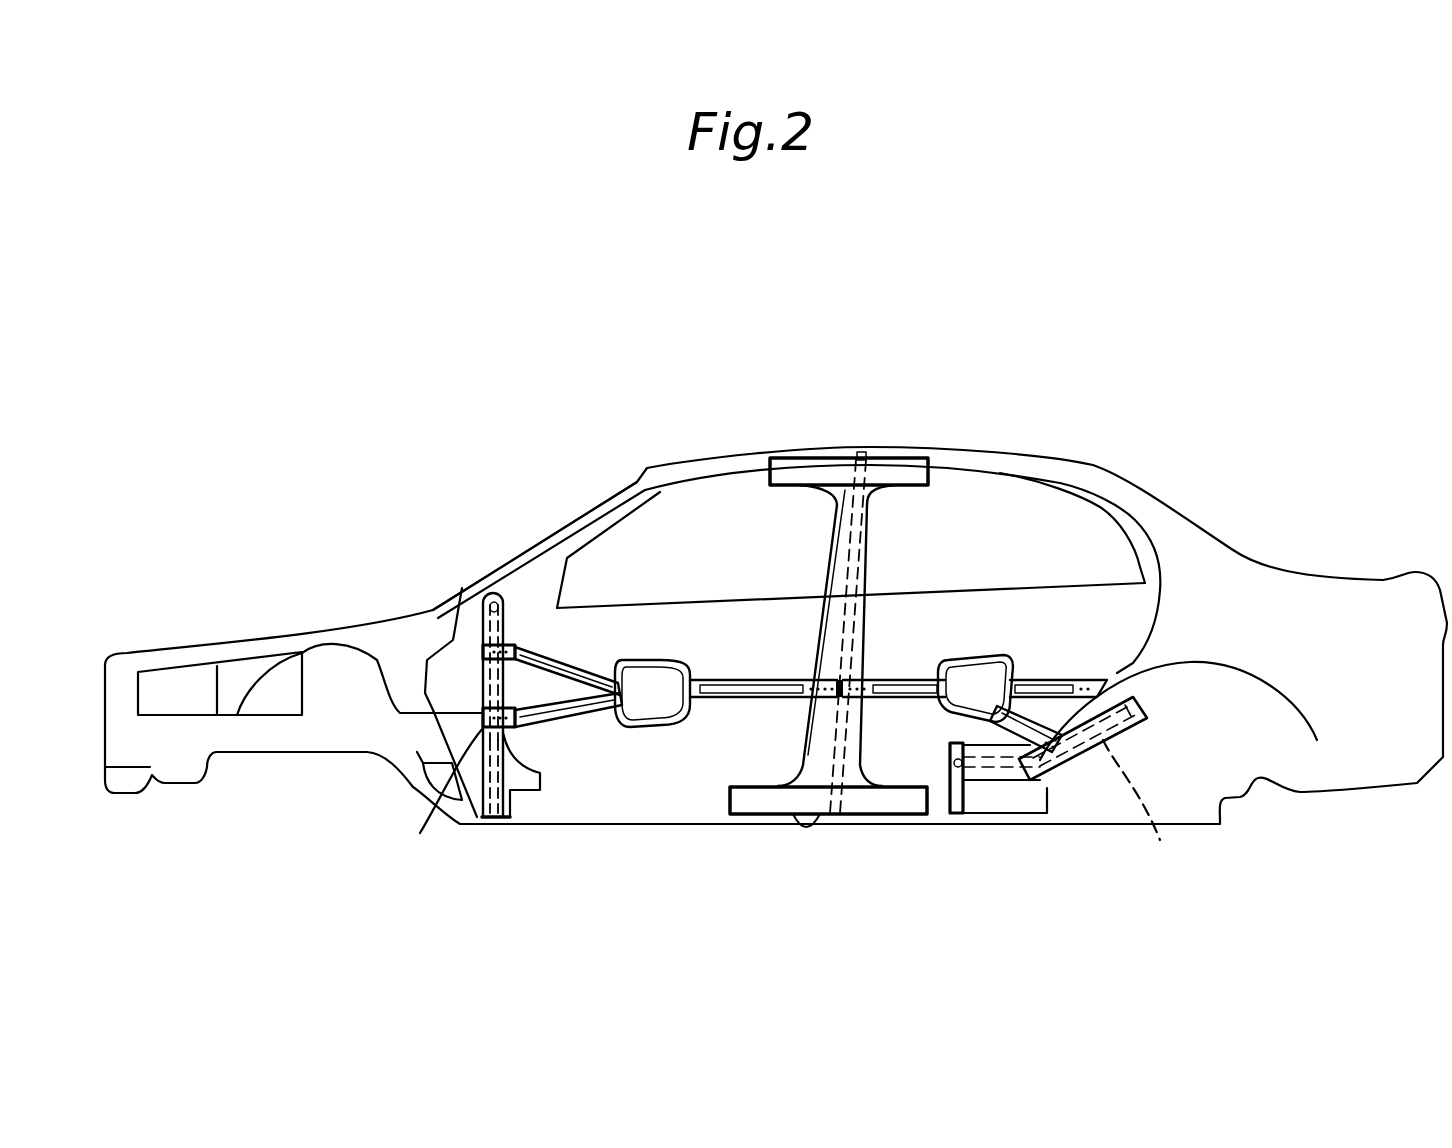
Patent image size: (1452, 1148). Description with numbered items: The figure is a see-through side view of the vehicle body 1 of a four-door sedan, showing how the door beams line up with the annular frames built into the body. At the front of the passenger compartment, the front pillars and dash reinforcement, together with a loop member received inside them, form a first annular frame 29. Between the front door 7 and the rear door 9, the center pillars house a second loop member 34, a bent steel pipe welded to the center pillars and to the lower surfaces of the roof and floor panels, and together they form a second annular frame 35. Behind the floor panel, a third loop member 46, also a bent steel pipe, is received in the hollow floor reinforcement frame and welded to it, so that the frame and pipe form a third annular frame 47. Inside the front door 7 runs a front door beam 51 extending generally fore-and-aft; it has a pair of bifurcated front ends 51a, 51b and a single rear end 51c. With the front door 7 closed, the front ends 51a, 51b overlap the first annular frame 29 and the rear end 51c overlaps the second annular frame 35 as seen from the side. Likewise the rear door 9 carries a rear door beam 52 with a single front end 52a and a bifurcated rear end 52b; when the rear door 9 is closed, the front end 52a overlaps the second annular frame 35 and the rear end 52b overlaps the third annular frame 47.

The vehicle body 1 is at (300, 398).
The first annular frame 29 is at (453, 596).
The front door 7 is at (650, 622).
The rear door 9 is at (1023, 593).
The second annular frame 35 is at (793, 442).
The second loop member 34 is at (861, 453).
The front end of front door beam 51a is at (503, 597).
The front end of front door beam 51b is at (497, 813).
The front door beam 51 is at (642, 732).
The rear end of front door beam 51c is at (828, 683).
The front end of rear door beam 52a is at (862, 682).
The rear door beam 52 is at (1015, 657).
The rear end of rear door beam 52b is at (1028, 790).
The third annular frame 47 is at (1075, 777).
The third loop member 46 is at (1149, 809).